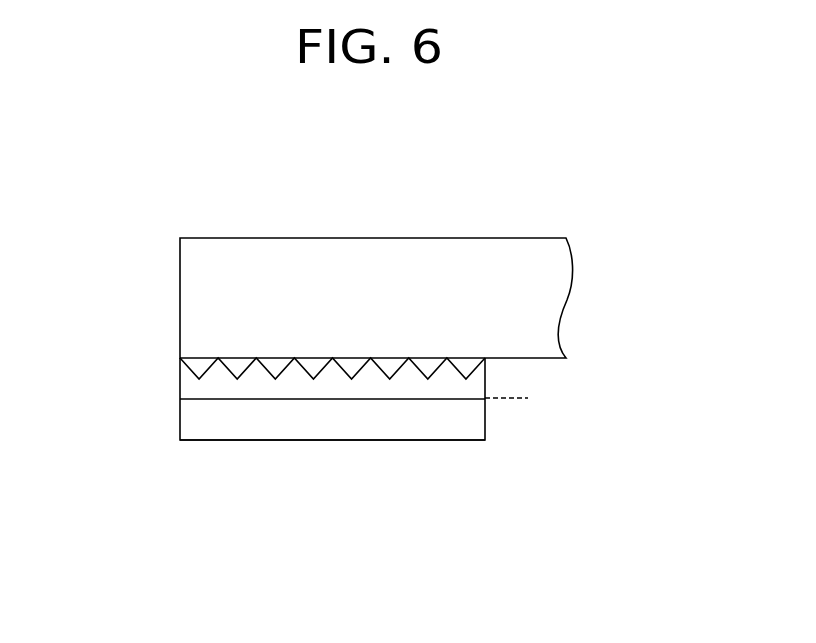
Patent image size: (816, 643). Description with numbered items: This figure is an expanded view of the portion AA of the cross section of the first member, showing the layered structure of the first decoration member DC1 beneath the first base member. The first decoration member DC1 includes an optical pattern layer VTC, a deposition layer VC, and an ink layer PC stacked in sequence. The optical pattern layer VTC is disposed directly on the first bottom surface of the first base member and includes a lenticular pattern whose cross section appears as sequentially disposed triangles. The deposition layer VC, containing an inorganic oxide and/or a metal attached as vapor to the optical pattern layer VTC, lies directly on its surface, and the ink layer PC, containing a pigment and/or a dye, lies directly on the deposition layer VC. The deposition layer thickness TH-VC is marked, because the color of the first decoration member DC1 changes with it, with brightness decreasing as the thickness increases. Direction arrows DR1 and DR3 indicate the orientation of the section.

The portion AA is at (492, 193).
The first decoration member DC1 is at (92, 364).
The optical pattern layer VTC is at (186, 365).
The deposition layer VC is at (186, 388).
The ink layer PC is at (186, 420).
The deposition layer thickness TH-VC is at (519, 359).
The first direction DR1 is at (607, 555).
The third direction DR3 is at (607, 555).